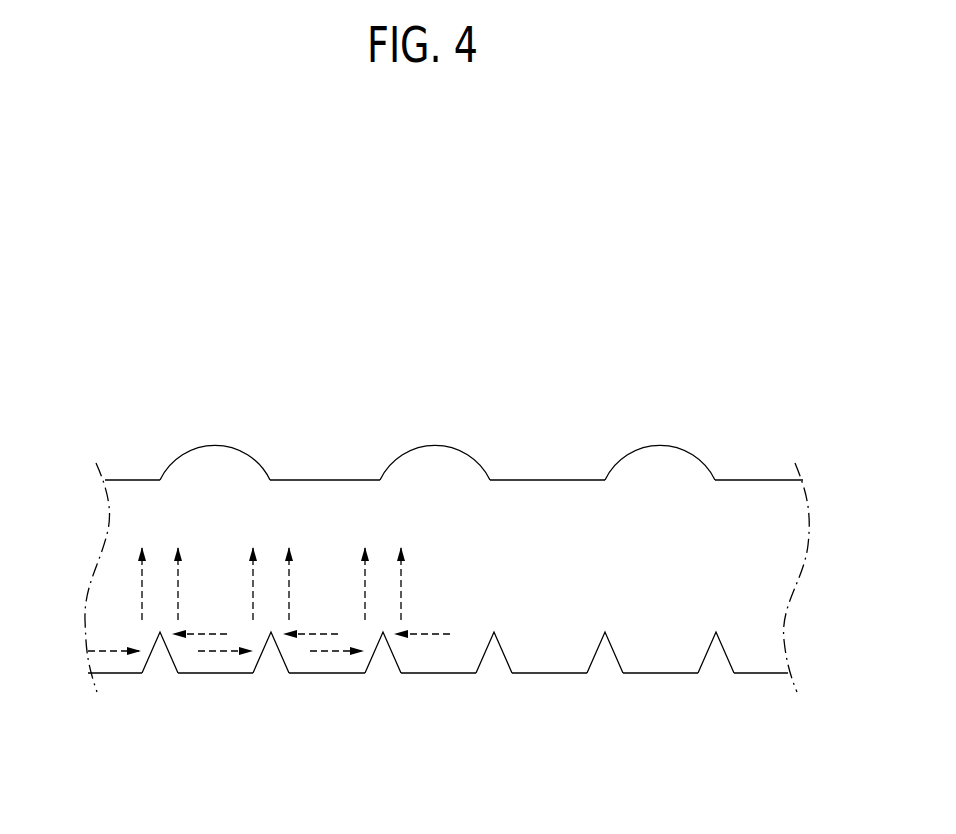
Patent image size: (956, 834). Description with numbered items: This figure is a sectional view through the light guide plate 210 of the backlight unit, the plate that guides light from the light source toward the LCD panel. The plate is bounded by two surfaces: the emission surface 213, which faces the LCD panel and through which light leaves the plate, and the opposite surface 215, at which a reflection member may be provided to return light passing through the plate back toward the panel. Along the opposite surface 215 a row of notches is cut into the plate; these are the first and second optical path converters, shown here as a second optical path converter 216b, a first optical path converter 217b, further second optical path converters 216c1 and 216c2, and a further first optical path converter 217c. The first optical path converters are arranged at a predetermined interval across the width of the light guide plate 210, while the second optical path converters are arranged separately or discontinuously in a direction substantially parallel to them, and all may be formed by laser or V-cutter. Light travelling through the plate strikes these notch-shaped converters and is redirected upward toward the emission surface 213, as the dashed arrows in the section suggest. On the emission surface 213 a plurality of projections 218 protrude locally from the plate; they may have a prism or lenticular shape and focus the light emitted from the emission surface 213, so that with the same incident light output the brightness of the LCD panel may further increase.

The light guide plate 210 is at (606, 332).
The emission surface 213 is at (762, 478).
The opposite surface 215 is at (124, 673).
The second optical path converter 216b is at (152, 655).
The first optical path converter 217b is at (375, 655).
The second optical path converter 216c1 is at (486, 655).
The second optical path converter 216c2 is at (597, 655).
The first optical path converter 217c is at (708, 655).
The projection 218 is at (213, 448).